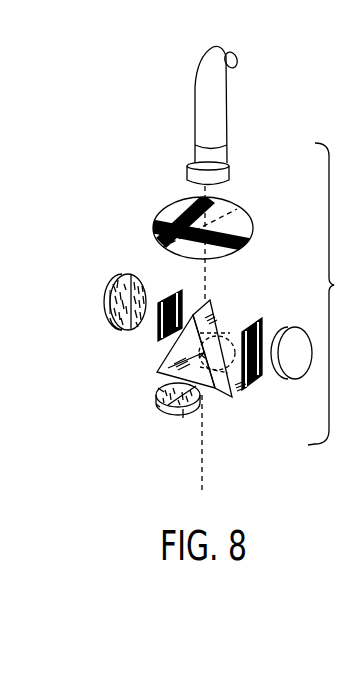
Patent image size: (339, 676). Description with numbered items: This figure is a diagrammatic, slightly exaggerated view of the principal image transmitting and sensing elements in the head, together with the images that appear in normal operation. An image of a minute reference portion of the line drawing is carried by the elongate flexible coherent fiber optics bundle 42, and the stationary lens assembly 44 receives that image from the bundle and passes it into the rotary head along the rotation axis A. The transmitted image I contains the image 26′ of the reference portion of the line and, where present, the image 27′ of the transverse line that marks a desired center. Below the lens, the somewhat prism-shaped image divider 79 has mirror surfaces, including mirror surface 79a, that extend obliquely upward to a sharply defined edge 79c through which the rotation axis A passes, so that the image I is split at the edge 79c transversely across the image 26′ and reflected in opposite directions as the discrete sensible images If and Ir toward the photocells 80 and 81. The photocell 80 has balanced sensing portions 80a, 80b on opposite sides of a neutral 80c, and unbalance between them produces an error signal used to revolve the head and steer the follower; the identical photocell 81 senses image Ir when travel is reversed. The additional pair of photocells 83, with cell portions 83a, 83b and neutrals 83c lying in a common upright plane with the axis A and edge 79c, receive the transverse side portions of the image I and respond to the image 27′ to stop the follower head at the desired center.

The coherent fiber optics bundle 42 is at (218, 109).
The stationary lens assembly 44 is at (231, 166).
The image of the minute reference portion of the line drawing 26′ is at (232, 249).
The image of the transverse line 27′ is at (198, 206).
The image I is at (254, 229).
The image divider 79 is at (218, 392).
The mirror surface 79a is at (243, 333).
The sharply defined edge 79c is at (197, 297).
The photocell 80 is at (110, 321).
The sensing portion 80a is at (114, 286).
The sensing portion 80b is at (139, 283).
The neutral 80c is at (126, 332).
The photocell 81 is at (294, 379).
The photocells 83 is at (147, 433).
The cell portion 83a is at (183, 418).
The cell portion 83b is at (166, 391).
The neutral 83c is at (158, 407).
The discrete sensible image If is at (150, 339).
The discrete sensible image Ir is at (265, 321).
The rotation axis A is at (198, 473).